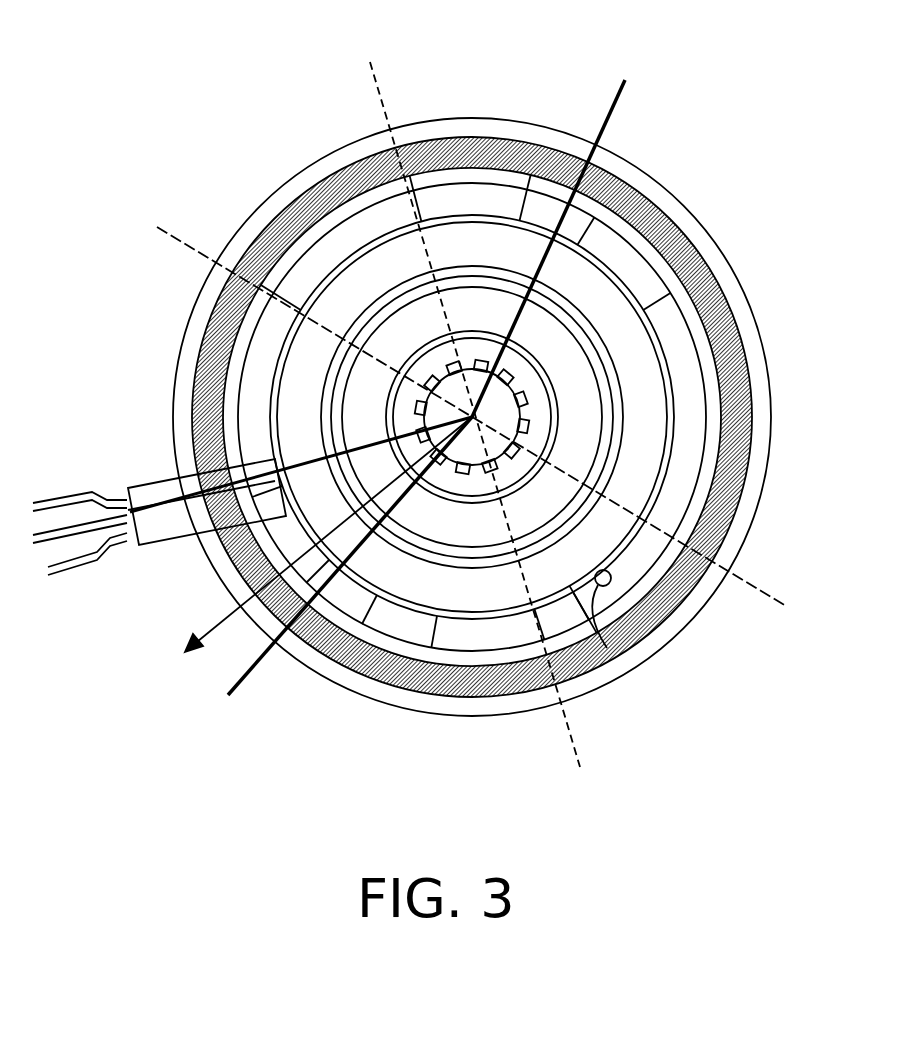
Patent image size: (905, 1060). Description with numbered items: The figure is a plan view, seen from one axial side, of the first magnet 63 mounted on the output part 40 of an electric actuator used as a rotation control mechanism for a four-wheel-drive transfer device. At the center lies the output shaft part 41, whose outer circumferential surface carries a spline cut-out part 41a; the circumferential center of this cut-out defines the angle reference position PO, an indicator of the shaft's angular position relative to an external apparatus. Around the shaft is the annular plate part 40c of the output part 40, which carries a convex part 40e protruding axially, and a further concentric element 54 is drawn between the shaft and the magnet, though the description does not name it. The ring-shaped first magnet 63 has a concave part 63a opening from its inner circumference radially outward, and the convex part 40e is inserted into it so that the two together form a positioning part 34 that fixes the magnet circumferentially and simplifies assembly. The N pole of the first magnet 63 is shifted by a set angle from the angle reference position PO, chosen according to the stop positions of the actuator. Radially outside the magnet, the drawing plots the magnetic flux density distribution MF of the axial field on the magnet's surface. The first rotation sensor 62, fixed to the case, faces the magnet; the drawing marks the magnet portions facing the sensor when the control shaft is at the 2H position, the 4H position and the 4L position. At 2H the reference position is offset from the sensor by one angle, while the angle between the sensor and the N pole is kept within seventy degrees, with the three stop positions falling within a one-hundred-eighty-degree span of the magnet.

The output part 40 is at (481, 112).
The annular plate part 40c is at (643, 650).
The convex part 40e is at (608, 663).
The output shaft part 41 is at (655, 208).
The spline cut-out part 41a is at (262, 334).
The rotor core 54 is at (650, 391).
The first rotation sensor 62 is at (147, 482).
The first magnet 63 is at (493, 640).
The concave part 63a is at (617, 571).
The positioning part 34 is at (471, 437).
The 4H position 4H is at (559, 236).
The 4L position 4L is at (336, 570).
The 2H position 2H is at (301, 482).
The magnetic flux density distribution MF is at (757, 468).
The angle reference position PO is at (400, 505).
The N pole of the first magnet N pole is at (282, 546).